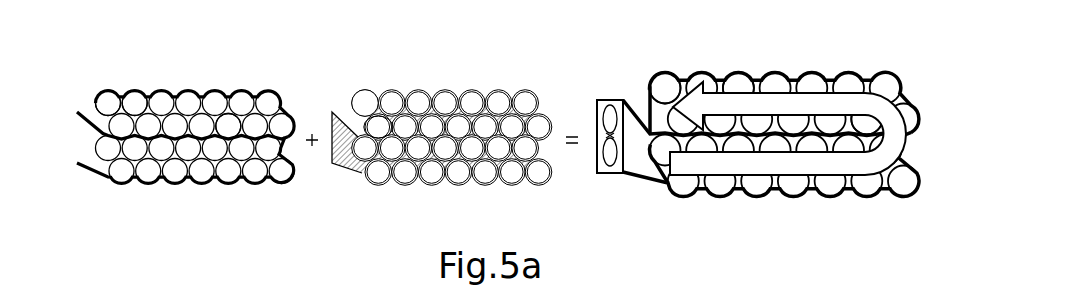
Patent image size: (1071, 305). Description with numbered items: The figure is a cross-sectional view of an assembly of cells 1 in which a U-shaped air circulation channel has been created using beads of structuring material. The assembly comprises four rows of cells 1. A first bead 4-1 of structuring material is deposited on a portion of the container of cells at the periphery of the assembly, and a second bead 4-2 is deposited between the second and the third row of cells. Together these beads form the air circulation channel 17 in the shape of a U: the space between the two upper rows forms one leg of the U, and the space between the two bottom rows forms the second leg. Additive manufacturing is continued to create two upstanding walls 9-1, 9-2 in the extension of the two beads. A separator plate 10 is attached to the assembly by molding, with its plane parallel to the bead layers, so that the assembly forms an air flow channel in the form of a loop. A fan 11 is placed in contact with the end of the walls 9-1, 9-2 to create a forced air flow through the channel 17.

The battery cell 1 is at (107, 104).
The first bead 4-1 is at (136, 95).
The second bead 4-2 is at (222, 130).
The upstanding wall 9-1 is at (82, 122).
The upstanding wall 9-2 is at (87, 167).
The separator plate 10 is at (385, 125).
The fan 11 is at (612, 100).
The air circulation channel 17 is at (775, 105).